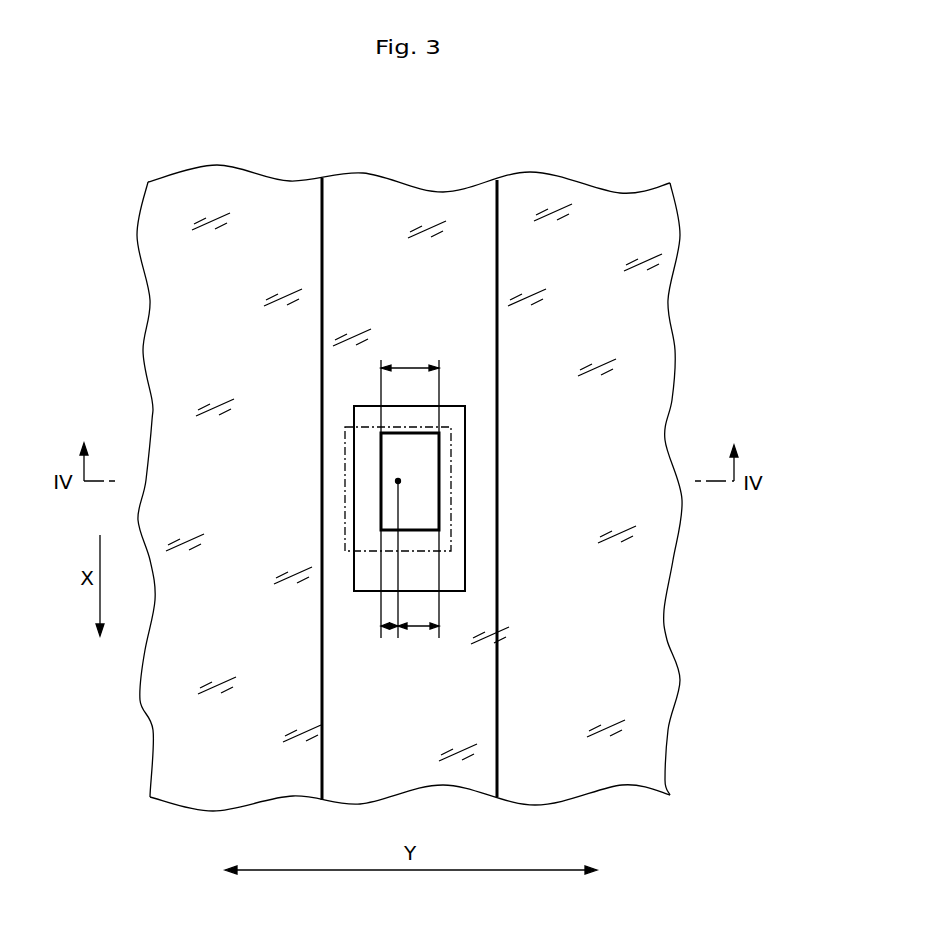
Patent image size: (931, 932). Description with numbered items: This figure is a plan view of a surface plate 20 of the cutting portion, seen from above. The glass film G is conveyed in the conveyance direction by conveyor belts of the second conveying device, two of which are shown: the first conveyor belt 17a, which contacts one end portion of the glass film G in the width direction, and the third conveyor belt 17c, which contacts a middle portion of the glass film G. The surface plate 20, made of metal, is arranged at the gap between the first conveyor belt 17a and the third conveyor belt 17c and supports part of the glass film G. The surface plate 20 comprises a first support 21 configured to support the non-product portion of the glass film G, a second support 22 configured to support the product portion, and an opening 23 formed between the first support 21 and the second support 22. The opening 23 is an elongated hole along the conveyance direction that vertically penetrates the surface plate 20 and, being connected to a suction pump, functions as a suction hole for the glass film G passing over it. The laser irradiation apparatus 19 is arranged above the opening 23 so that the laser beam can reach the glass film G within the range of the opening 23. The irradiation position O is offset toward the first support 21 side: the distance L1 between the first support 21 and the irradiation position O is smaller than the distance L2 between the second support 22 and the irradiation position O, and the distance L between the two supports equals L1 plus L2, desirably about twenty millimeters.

The glass film G is at (622, 658).
The first conveyor belt 17a is at (322, 232).
The third conveyor belt 17c is at (497, 228).
The laser irradiation apparatus 19 is at (345, 514).
The surface plate 20 is at (451, 396).
The first support 21 is at (366, 463).
The second support 22 is at (458, 477).
The opening 23 is at (440, 505).
The irradiation position O is at (398, 481).
The distance between first support and second support L is at (410, 364).
The distance between first support and irradiation position L1 is at (390, 630).
The distance between second support and irradiation position L2 is at (418, 630).